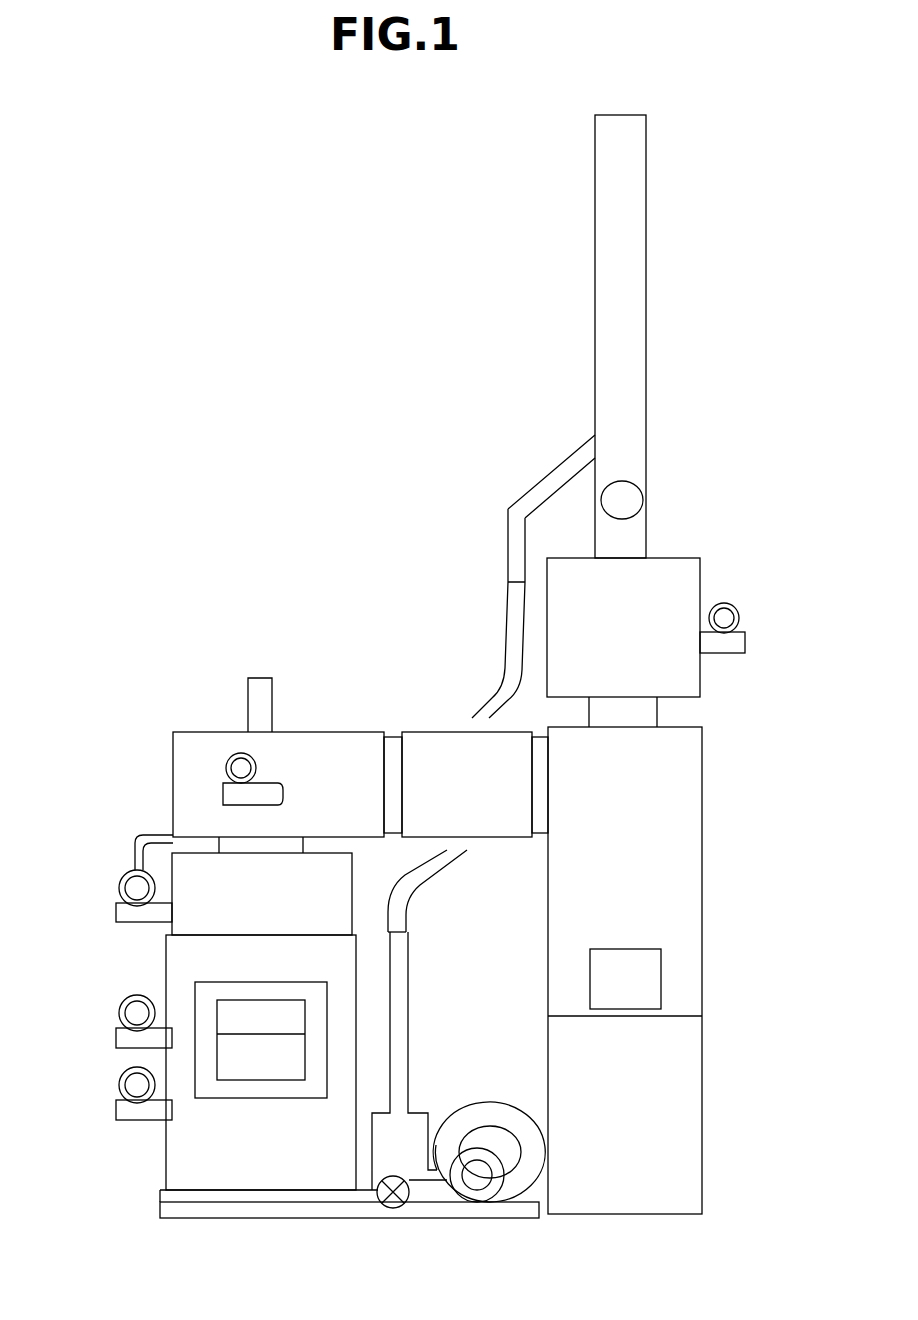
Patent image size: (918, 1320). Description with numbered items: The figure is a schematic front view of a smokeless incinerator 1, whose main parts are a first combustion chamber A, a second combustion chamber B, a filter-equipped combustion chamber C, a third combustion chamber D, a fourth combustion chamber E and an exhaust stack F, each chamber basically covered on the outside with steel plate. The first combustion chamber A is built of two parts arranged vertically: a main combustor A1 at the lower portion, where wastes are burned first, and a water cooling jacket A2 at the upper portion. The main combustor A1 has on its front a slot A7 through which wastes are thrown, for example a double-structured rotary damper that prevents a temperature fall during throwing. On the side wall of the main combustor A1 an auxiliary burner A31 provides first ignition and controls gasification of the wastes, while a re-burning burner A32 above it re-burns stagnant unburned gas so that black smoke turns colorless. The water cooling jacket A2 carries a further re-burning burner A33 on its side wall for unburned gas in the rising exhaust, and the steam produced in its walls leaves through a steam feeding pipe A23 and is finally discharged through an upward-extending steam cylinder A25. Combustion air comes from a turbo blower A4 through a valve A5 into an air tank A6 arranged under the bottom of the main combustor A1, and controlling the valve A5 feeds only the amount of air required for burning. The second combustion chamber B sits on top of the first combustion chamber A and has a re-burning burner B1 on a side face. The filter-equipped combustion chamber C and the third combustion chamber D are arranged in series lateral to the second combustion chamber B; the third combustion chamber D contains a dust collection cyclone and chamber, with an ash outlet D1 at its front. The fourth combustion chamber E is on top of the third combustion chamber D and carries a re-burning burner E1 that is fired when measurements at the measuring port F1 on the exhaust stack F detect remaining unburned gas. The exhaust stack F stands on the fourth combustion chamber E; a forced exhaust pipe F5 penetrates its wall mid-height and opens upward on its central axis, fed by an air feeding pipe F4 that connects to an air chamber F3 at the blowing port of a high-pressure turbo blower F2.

The smokeless incinerator 1 is at (312, 433).
The first combustion chamber A is at (65, 847).
The main combustor A1 is at (274, 973).
The water cooling jacket A2 is at (272, 905).
The turbo blower A4 is at (477, 1176).
The valve A5 is at (392, 1209).
The air tank A6 is at (262, 1194).
The slot A7 is at (235, 1010).
The steam feeding pipe A23 is at (133, 845).
The steam cylinder A25 is at (260, 699).
The auxiliary burner A31 is at (133, 1085).
The re-burning burner A32 is at (133, 1013).
The re-burning burner A33 is at (133, 888).
The second combustion chamber B is at (326, 790).
The re-burning burner B1 is at (238, 768).
The filter-equipped combustion chamber C is at (468, 790).
The third combustion chamber D is at (632, 843).
The ash outlet D1 is at (634, 976).
The fourth combustion chamber E is at (626, 632).
The re-burning burner E1 is at (737, 612).
The exhaust stack F is at (627, 345).
The measuring port F1 is at (628, 500).
The high-pressure turbo blower F2 is at (501, 1110).
The air chamber F3 is at (415, 1124).
The air feeding pipe F4 is at (435, 880).
The forced exhaust pipe F5 is at (566, 468).